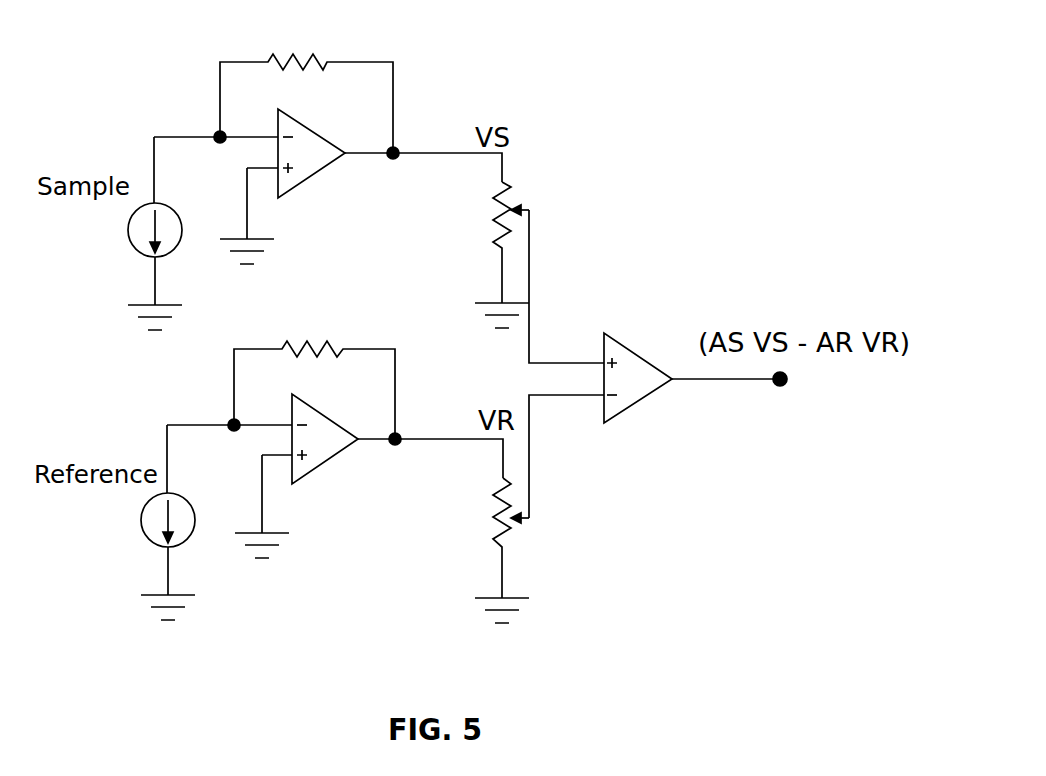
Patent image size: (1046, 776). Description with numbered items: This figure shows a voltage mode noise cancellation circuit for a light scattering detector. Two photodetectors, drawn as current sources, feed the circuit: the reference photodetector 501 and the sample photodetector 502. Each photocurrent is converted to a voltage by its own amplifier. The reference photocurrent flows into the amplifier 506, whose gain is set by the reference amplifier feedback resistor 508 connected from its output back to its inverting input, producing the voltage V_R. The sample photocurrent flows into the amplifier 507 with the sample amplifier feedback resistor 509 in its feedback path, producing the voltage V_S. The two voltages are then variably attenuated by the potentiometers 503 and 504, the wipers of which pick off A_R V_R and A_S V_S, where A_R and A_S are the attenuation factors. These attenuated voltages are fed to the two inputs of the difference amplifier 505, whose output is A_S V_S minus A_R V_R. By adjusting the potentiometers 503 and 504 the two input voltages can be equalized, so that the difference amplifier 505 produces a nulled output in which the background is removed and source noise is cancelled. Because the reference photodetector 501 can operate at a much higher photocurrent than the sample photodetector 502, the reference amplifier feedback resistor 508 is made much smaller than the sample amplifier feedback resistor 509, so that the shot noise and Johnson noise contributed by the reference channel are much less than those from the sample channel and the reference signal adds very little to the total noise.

The reference photodetector 501 is at (146, 544).
The sample photodetector 502 is at (258, 283).
The potentiometer 503 is at (484, 538).
The potentiometer 504 is at (482, 242).
The difference amplifier 505 is at (695, 391).
The amplifier 506 is at (331, 449).
The amplifier 507 is at (314, 162).
The reference amplifier feedback resistor 508 is at (314, 370).
The sample amplifier feedback resistor 509 is at (306, 86).